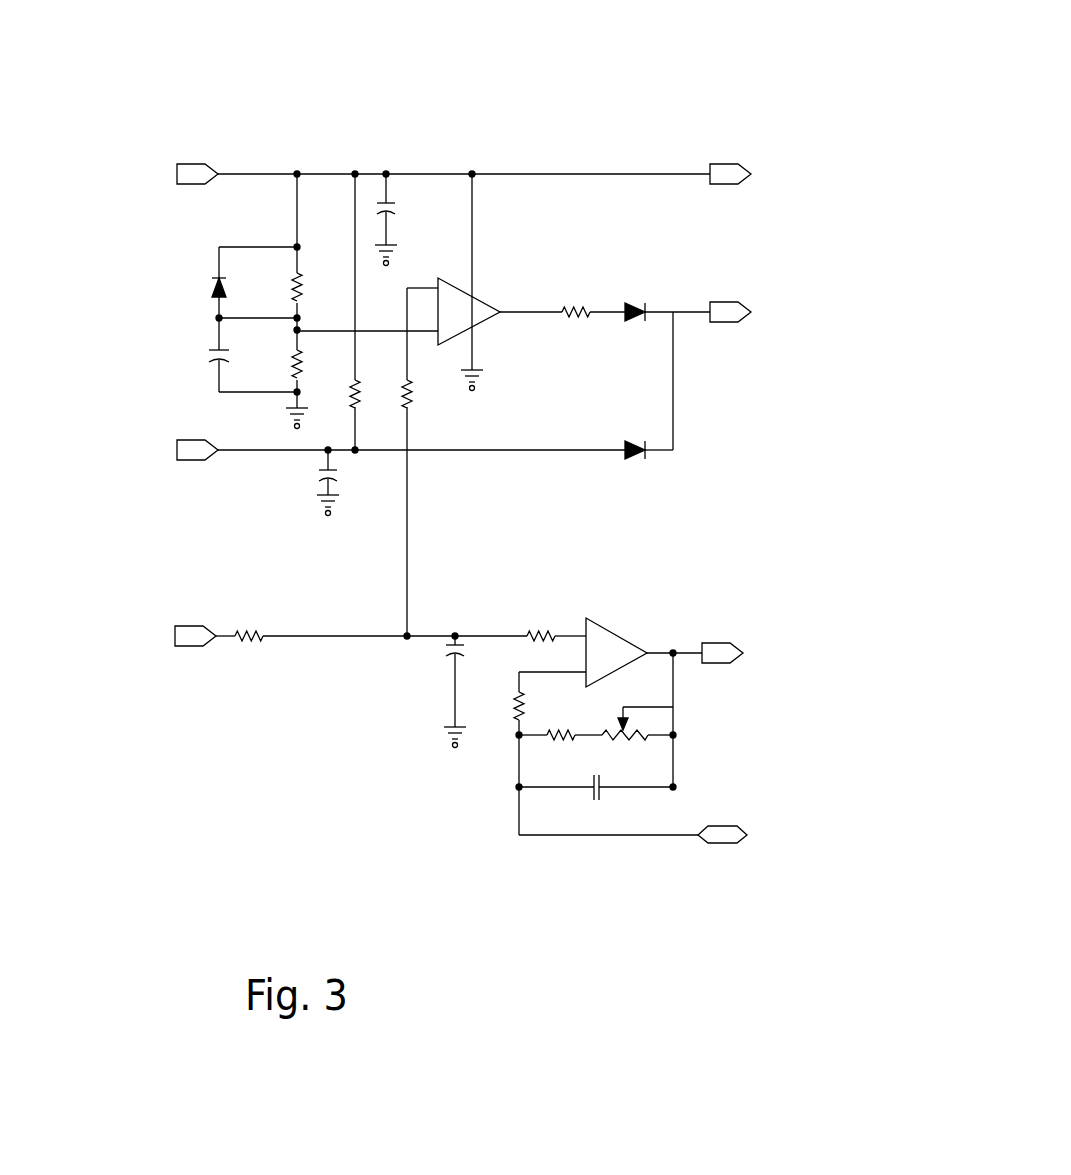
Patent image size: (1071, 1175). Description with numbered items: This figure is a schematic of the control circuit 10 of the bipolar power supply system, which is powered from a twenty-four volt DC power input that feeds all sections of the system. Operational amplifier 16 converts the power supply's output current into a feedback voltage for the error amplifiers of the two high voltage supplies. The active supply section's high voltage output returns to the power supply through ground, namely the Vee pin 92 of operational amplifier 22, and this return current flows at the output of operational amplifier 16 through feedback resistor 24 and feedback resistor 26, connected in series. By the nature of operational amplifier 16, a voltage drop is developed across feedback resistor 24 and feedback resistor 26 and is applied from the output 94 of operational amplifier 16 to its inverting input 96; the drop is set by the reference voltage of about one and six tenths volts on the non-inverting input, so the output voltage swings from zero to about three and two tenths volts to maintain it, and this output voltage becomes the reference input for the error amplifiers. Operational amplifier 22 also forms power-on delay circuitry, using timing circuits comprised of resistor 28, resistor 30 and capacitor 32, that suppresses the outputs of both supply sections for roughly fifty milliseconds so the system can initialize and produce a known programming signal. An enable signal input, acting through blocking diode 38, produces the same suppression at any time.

The control circuit 10 is at (646, 100).
The operational amplifier 22 is at (490, 306).
The blocking diode 38 is at (648, 309).
The Vee pin 92 is at (472, 352).
The resistor 30 is at (290, 275).
The capacitor 32 is at (210, 351).
The resistor 28 is at (288, 365).
The output 94 is at (627, 633).
The inverting input 96 is at (587, 684).
The operational amplifier 16 is at (627, 670).
The feedback resistor 26 is at (558, 742).
The feedback resistor 24 is at (643, 745).